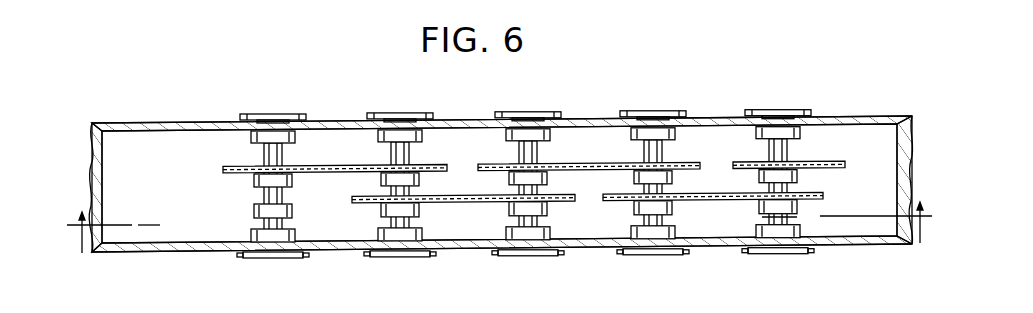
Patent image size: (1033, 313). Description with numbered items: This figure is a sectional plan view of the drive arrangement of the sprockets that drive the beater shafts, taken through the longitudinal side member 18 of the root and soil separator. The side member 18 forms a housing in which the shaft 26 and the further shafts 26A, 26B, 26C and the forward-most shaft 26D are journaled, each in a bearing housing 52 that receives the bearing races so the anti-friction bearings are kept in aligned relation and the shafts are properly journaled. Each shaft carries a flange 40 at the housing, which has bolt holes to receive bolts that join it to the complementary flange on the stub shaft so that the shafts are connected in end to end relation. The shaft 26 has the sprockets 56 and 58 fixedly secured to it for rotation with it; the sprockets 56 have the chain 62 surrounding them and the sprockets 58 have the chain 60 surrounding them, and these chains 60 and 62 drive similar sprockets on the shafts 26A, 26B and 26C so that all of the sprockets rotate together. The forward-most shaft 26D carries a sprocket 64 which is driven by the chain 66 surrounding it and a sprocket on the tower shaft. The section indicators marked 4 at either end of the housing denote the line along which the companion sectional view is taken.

The side member 18 is at (187, 122).
The flange 40 is at (270, 113).
The bearing housing 52 is at (388, 259).
The sprocket 56 is at (246, 165).
The sprocket 58 is at (354, 200).
The chain 60 is at (452, 203).
The chain 62 is at (316, 165).
The sprocket 64 is at (744, 162).
The chain 66 is at (834, 168).
The shaft 26 is at (662, 188).
The shaft 26A is at (537, 186).
The shaft 26B is at (409, 185).
The shaft 26C is at (264, 200).
The forward-most shaft 26D is at (787, 150).
The section line 4- 4 is at (499, 210).